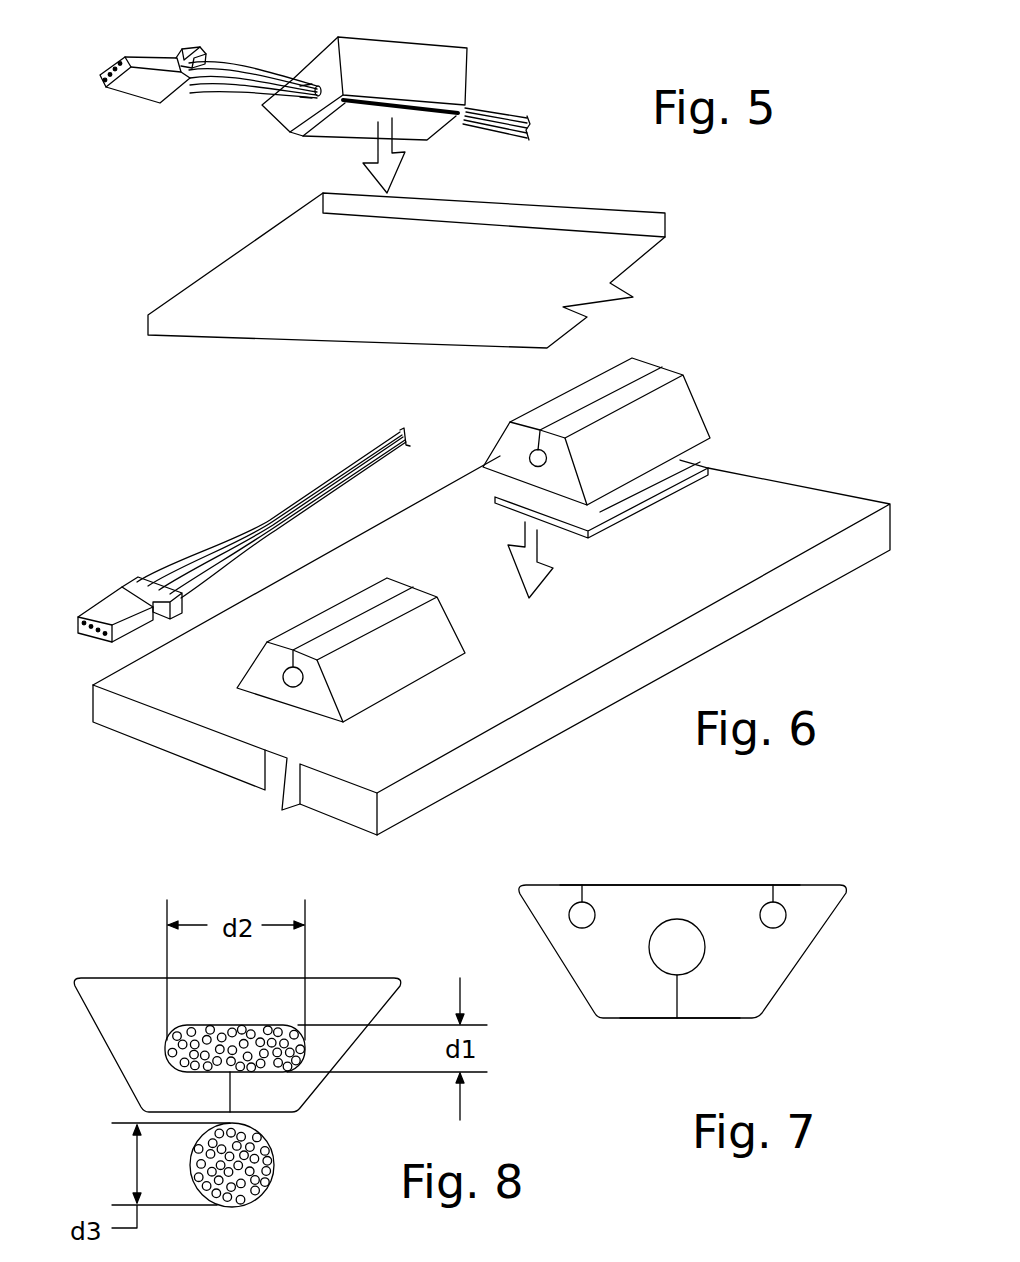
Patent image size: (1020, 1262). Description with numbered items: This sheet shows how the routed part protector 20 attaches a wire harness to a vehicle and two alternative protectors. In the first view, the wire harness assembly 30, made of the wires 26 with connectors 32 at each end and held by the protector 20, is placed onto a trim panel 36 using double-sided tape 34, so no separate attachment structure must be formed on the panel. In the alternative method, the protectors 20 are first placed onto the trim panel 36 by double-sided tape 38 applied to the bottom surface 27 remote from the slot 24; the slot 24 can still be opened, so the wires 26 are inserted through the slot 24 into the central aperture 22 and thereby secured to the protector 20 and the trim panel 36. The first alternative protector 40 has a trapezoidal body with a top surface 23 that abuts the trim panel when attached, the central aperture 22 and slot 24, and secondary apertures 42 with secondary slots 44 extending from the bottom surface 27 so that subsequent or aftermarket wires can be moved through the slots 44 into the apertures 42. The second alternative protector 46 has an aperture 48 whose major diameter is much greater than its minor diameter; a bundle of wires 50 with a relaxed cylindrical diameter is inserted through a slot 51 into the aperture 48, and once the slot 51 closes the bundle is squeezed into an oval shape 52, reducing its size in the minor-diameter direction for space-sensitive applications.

In FIG. 5, the routed part protector 20 is at (394, 60).
In FIG. 6, the routed part protector 20 is at (520, 480).
In FIG. 6, the central aperture 22 is at (528, 462).
In FIG. 7, the central aperture 22 is at (694, 965).
In FIG. 7, the top surface 23 is at (750, 1018).
In FIG. 6, the slot 24 is at (605, 367).
In FIG. 7, the slot 24 is at (672, 1000).
In FIG. 5, the wires 26 is at (493, 115).
In FIG. 6, the wires 26 is at (337, 488).
In FIG. 6, the bottom surface 27 is at (697, 447).
In FIG. 7, the bottom surface 27 is at (663, 885).
In FIG. 5, the wire harness assembly 30 is at (290, 160).
In FIG. 5, the connectors 32 is at (146, 86).
In FIG. 6, the connectors 32 is at (110, 607).
In FIG. 5, the double-sided tape 34 is at (428, 130).
In FIG. 5, the trim panel 36 is at (424, 299).
In FIG. 6, the trim panel 36 is at (570, 658).
In FIG. 6, the double-sided tape 38 is at (633, 517).
In FIG. 7, the alternative embodiment protector 40 is at (730, 865).
In FIG. 7, the secondary apertures 42 is at (585, 913).
In FIG. 7, the secondary slots 44 is at (583, 897).
In FIG. 8, the protector 46 is at (90, 1027).
In FIG. 8, the aperture 48 is at (263, 1047).
In FIG. 8, the wires 50 is at (260, 1163).
In FIG. 8, the slot 51 is at (230, 1087).
In FIG. 8, the oval shape 52 is at (228, 1045).